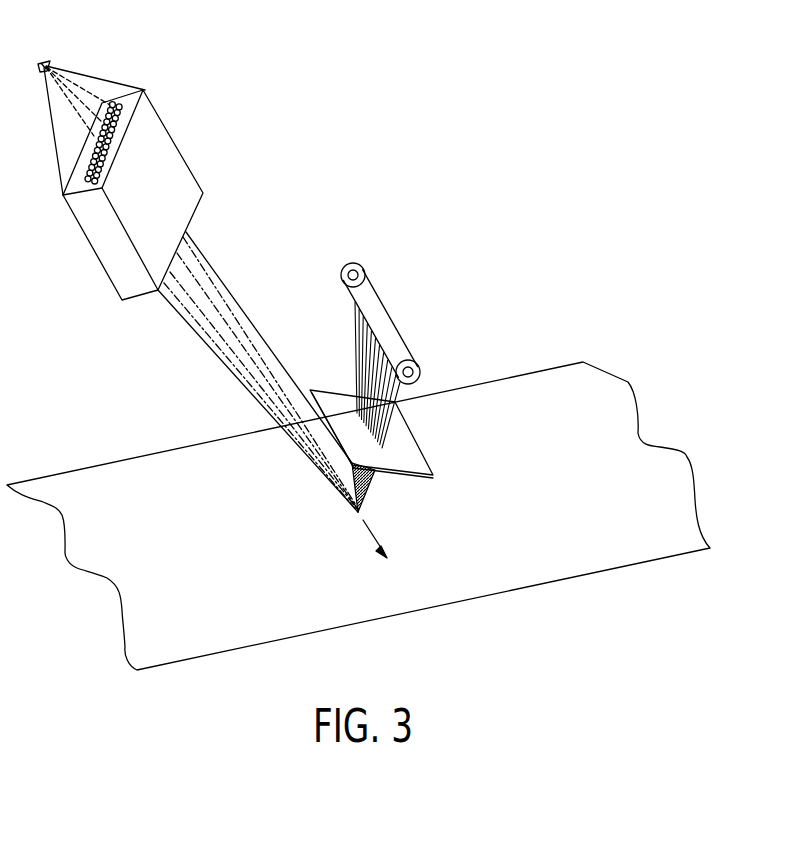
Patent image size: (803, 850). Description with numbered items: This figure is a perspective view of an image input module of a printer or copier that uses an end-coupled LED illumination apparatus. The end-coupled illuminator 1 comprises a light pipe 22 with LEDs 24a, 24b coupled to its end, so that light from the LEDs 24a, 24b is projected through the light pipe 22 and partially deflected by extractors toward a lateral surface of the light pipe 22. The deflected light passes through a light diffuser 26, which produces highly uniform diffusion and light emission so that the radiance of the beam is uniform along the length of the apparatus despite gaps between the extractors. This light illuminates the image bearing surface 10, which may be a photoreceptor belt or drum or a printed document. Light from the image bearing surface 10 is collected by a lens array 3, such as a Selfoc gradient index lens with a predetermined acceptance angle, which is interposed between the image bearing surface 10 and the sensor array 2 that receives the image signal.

The end-coupled illuminator 1 is at (395, 323).
The sensor array 2 is at (45, 61).
The lens array 3 is at (172, 143).
The image bearing surface 10 is at (628, 381).
The light pipe 22 is at (390, 312).
The LED 24a is at (420, 372).
The LED 24b is at (366, 273).
The light diffuser 26 is at (418, 444).